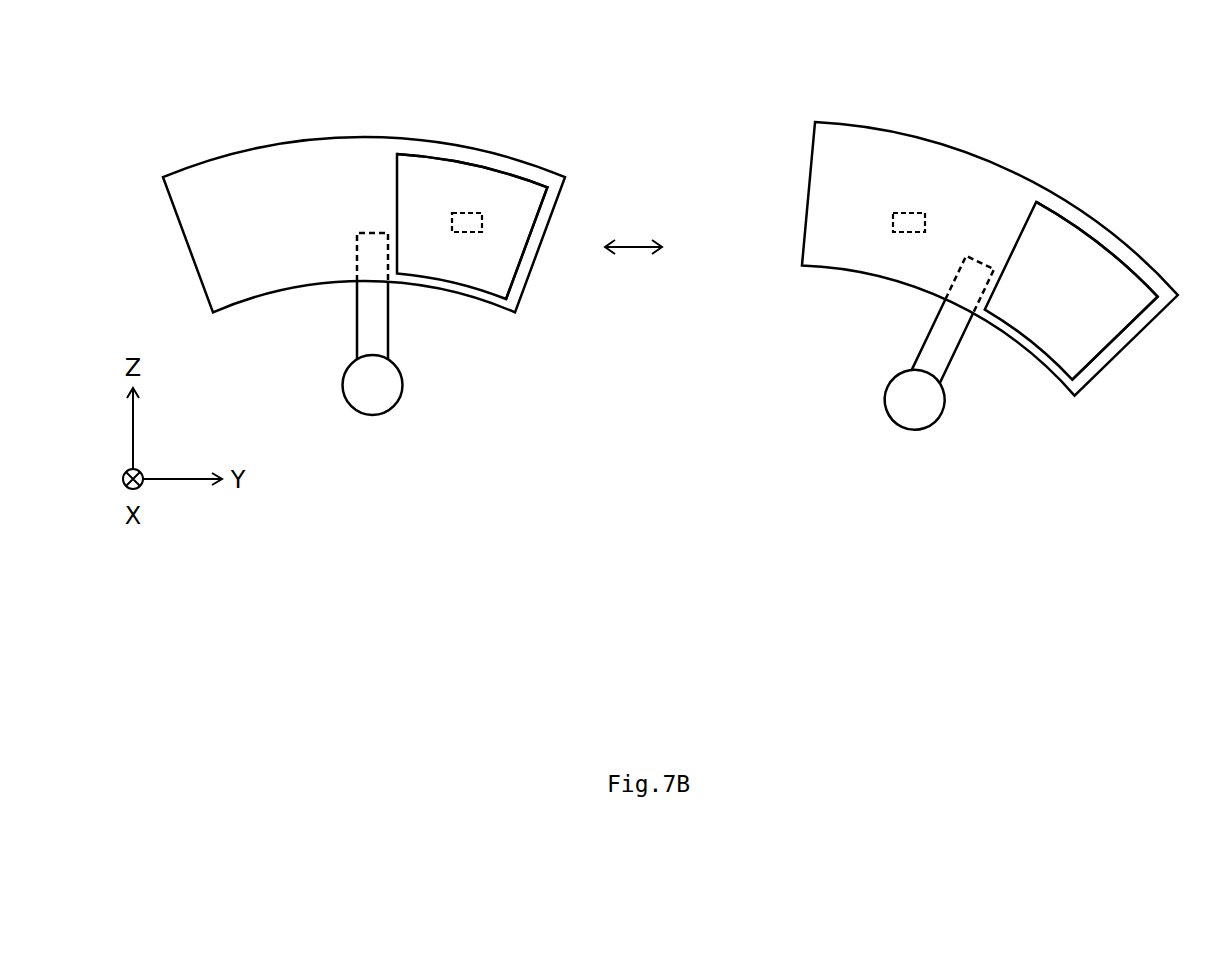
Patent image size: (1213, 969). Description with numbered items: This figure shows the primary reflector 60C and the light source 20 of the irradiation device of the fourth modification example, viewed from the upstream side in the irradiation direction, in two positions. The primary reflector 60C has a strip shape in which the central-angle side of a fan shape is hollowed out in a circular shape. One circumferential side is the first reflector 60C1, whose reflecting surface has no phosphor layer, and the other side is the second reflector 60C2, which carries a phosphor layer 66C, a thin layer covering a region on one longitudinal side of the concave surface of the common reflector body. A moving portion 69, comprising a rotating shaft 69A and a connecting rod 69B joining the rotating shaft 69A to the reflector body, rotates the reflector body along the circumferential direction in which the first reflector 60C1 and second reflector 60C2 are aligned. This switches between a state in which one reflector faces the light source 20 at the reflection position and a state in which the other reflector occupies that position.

The primary reflector 60C is at (679, 220).
The first reflector 60C1 is at (288, 185).
The second reflector 60C2 is at (452, 183).
The phosphor layer 66C is at (500, 187).
The light source 20 is at (452, 222).
The moving portion 69 is at (726, 343).
The rotating shaft 69A is at (400, 402).
The connecting rod 69B is at (388, 329).